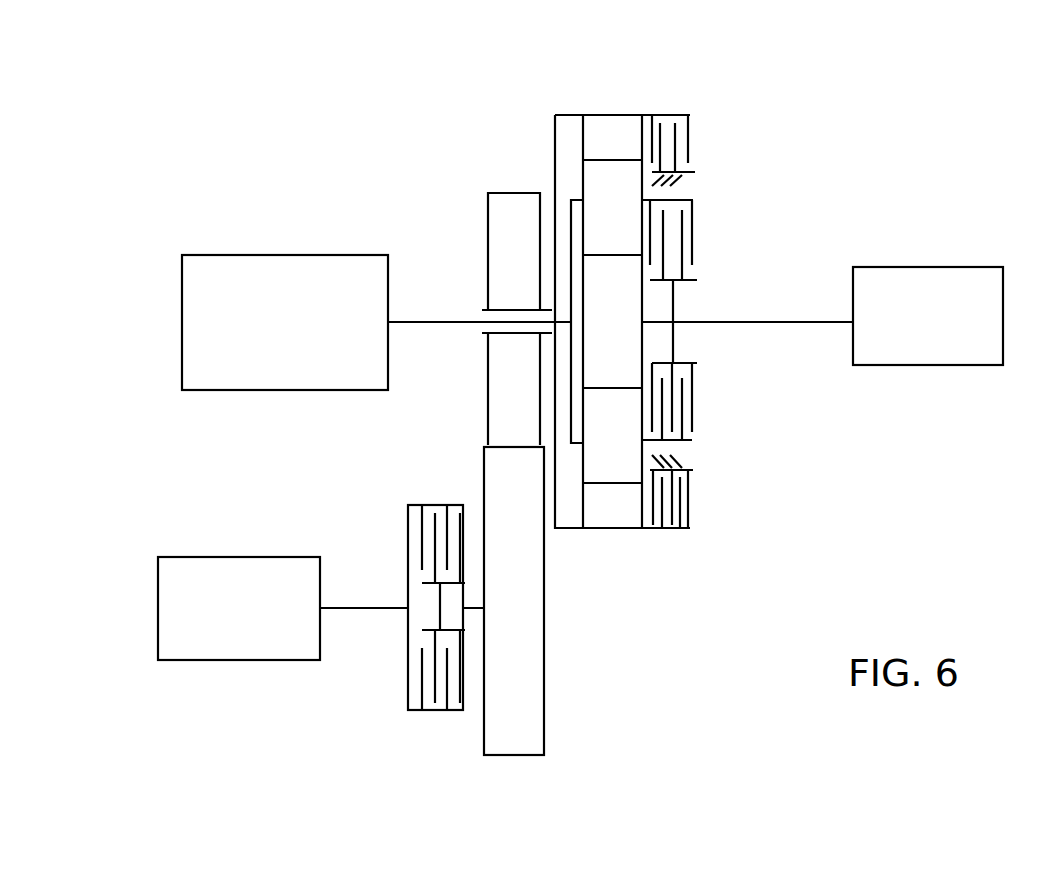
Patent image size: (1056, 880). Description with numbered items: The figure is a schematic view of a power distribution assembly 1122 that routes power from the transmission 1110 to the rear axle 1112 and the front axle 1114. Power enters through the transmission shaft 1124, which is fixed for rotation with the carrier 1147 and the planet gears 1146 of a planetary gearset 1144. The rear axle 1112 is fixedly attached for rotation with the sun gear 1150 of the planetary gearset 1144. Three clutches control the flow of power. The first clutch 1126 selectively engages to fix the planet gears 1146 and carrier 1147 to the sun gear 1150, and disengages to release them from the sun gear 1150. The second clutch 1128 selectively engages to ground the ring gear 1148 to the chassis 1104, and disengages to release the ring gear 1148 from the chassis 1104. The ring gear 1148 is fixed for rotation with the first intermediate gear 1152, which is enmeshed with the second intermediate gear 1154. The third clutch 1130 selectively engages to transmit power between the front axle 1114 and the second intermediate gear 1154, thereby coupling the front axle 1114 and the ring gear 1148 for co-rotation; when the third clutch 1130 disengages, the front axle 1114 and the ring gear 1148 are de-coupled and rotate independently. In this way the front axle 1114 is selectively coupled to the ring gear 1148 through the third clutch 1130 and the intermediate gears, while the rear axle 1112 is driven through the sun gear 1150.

The chassis 1104 is at (688, 170).
The transmission 1110 is at (285, 255).
The rear axle 1112 is at (928, 267).
The front axle 1114 is at (237, 557).
The power distribution assembly 1122 is at (708, 785).
The transmission shaft 1124 is at (425, 320).
The first clutch 1126 is at (702, 216).
The second clutch 1128 is at (693, 108).
The third clutch 1130 is at (413, 715).
The planetary gearset 1144 is at (611, 540).
The planet gears 1146 is at (617, 177).
The carrier 1147 is at (571, 393).
The ring gear 1148 is at (605, 127).
The sun gear 1150 is at (622, 303).
The first intermediate gear 1152 is at (517, 200).
The second intermediate gear 1154 is at (530, 707).